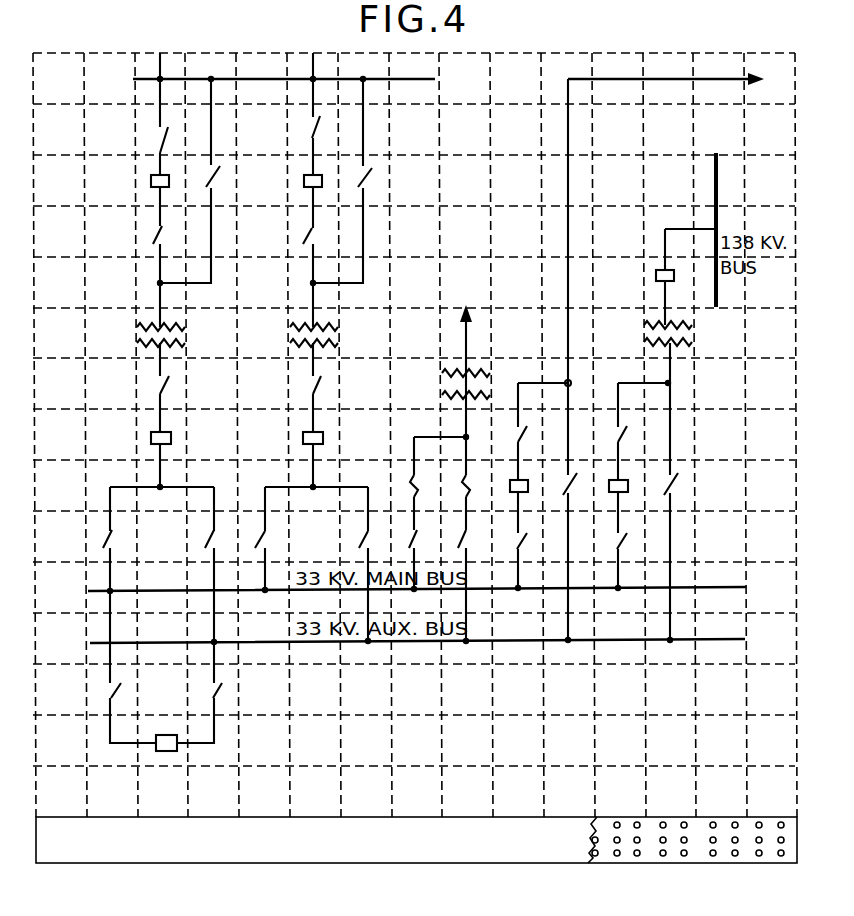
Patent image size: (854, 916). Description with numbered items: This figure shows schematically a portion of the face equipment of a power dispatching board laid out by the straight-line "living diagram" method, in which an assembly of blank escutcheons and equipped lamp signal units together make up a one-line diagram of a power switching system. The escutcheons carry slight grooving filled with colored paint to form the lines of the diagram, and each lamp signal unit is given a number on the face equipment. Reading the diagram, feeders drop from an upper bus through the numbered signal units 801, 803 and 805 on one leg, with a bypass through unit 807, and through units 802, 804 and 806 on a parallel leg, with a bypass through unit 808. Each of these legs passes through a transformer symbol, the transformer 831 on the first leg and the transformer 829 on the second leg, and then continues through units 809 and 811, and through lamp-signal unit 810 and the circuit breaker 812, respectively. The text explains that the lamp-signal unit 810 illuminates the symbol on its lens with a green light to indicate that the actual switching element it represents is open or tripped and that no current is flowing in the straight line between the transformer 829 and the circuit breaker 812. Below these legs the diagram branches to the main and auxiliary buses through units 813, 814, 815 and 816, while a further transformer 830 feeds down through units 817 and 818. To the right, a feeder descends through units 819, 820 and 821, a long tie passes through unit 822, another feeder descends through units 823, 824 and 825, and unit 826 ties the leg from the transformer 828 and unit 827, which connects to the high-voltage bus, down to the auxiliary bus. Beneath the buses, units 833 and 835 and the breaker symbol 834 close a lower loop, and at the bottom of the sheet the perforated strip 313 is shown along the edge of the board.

The disconnect switch 801 is at (166, 114).
The disconnect switch 802 is at (319, 114).
The circuit breaker 803 is at (166, 191).
The circuit breaker 804 is at (319, 191).
The disconnect switch 805 is at (163, 257).
The disconnect switch 806 is at (314, 257).
The bypass disconnect switch 807 is at (199, 181).
The bypass disconnect switch 808 is at (352, 181).
The disconnect switch 809 is at (166, 387).
The lamp-signal unit 810 is at (319, 387).
The circuit breaker 811 is at (166, 459).
The circuit breaker 812 is at (319, 459).
The disconnect switch 813 is at (114, 540).
The disconnect switch 814 is at (270, 540).
The disconnect switch 815 is at (218, 566).
The disconnect switch 816 is at (371, 565).
The disconnect switch 817 is at (419, 514).
The disconnect switch 818 is at (471, 540).
The disconnect switch 819 is at (536, 430).
The circuit breaker 820 is at (523, 498).
The disconnect switch 821 is at (521, 541).
The disconnect switch 822 is at (572, 361).
The disconnect switch 823 is at (637, 430).
The circuit breaker 824 is at (623, 498).
The disconnect switch 825 is at (622, 541).
The disconnect switch 826 is at (675, 493).
The circuit breaker 827 is at (682, 277).
The transformer 828 is at (687, 333).
The transformer 829 is at (335, 335).
The transformer 830 is at (440, 372).
The transformer 831 is at (180, 335).
The disconnect switch 833 is at (126, 667).
The circuit breaker 834 is at (159, 754).
The disconnect switch 835 is at (209, 693).
The perforated terminal strip 313 is at (615, 856).